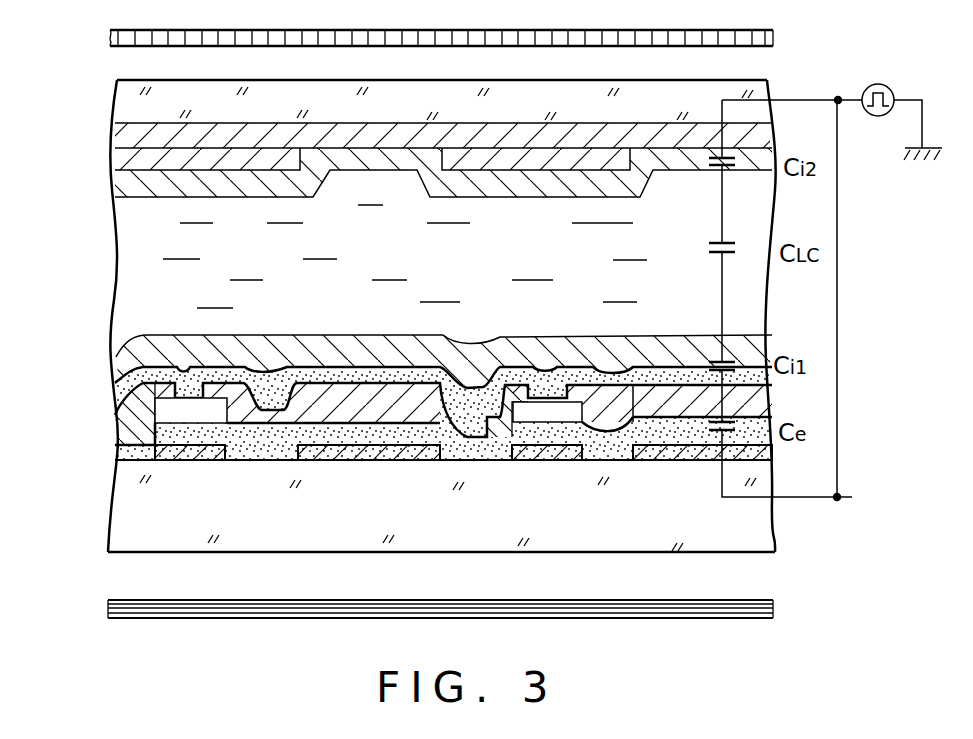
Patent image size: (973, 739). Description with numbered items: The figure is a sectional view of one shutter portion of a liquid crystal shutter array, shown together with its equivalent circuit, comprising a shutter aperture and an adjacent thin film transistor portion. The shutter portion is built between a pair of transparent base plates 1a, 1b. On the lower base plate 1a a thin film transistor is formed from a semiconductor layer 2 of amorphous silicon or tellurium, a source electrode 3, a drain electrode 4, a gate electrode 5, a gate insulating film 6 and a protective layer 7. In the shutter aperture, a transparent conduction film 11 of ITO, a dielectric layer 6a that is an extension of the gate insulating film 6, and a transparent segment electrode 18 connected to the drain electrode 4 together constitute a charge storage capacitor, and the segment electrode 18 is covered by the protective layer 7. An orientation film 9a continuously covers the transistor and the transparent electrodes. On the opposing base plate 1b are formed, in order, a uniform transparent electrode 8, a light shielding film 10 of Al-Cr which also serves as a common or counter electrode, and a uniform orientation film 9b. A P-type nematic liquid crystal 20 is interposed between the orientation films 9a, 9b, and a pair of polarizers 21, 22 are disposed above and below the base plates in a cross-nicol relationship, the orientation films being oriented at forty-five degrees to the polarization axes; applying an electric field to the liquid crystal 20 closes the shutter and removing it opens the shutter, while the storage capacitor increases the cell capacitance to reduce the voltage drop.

The transparent base plate 1a is at (122, 512).
The transparent base plate 1b is at (117, 100).
The semiconductor layer 2 is at (178, 452).
The source electrode 3 is at (130, 408).
The drain electrode 4 is at (250, 432).
The gate electrode 5 is at (205, 435).
The gate insulating film 6 is at (120, 452).
The dielectric layer 6a is at (330, 430).
The protective layer 7 is at (140, 378).
The uniform transparent electrode 8 is at (118, 128).
The orientation film 9a is at (150, 345).
The uniform orientation film 9b is at (118, 180).
The light shielding film 10 is at (235, 197).
The transparent conduction film 11 is at (415, 452).
The transparent segment electrode 18 is at (375, 410).
The liquid crystal 20 is at (122, 258).
The polarizer 21 is at (773, 38).
The polarizer 22 is at (773, 607).